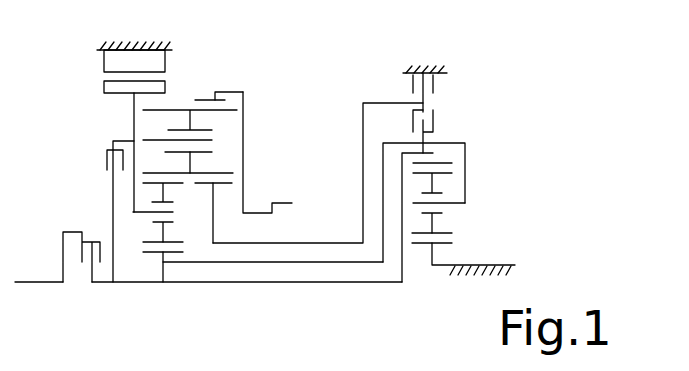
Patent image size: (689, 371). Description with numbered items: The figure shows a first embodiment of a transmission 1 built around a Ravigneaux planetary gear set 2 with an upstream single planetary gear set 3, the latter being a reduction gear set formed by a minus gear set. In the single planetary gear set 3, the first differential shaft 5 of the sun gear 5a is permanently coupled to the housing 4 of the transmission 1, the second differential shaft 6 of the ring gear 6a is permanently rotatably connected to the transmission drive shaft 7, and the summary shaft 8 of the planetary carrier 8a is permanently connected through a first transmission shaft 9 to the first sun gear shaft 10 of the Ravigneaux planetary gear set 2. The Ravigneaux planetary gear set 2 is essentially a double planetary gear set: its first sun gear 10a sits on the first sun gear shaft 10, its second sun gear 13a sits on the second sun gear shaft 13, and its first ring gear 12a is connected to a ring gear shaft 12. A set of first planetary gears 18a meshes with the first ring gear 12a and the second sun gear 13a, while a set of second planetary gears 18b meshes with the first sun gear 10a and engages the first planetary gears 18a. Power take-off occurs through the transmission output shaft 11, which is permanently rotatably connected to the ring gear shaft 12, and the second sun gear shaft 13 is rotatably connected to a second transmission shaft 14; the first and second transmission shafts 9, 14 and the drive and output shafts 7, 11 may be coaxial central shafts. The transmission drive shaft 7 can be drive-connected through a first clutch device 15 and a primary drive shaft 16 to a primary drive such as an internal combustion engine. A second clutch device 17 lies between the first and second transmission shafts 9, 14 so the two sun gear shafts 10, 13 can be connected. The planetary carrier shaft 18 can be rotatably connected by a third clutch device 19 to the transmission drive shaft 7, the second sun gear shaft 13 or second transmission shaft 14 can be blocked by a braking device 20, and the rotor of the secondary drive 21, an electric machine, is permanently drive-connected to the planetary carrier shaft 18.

The transmission 1 is at (344, 76).
The Ravigneaux planetary gear set 2 is at (203, 163).
The single planetary gear set 3 is at (442, 179).
The housing 4 is at (160, 45).
The first differential shaft 5 is at (440, 268).
The sun gear 5a is at (434, 257).
The second differential shaft 6 is at (404, 152).
The ring gear 6a is at (434, 157).
The transmission drive shaft 7 is at (290, 283).
The summary shaft 8 is at (466, 186).
The planetary carrier 8a is at (454, 204).
The first transmission shaft 9 is at (338, 263).
The first sun gear shaft 10 is at (163, 283).
The first sun gear 10a is at (147, 253).
The transmission output shaft 11 is at (244, 120).
The ring gear shaft 12 is at (216, 91).
The first ring gear 12a is at (226, 100).
The second sun gear shaft 13 is at (214, 188).
The second sun gear 13a is at (223, 187).
The second transmission shaft 14 is at (340, 241).
The first clutch device 15 is at (82, 232).
The primary drive shaft 16 is at (48, 285).
The second clutch device 17 is at (434, 127).
The planetary carrier shaft 18 is at (153, 138).
The first planetary gears 18a is at (177, 122).
The second planetary gears 18b is at (157, 233).
The third clutch device 19 is at (101, 157).
The braking device 20 is at (437, 88).
The secondary drive 21 is at (133, 63).